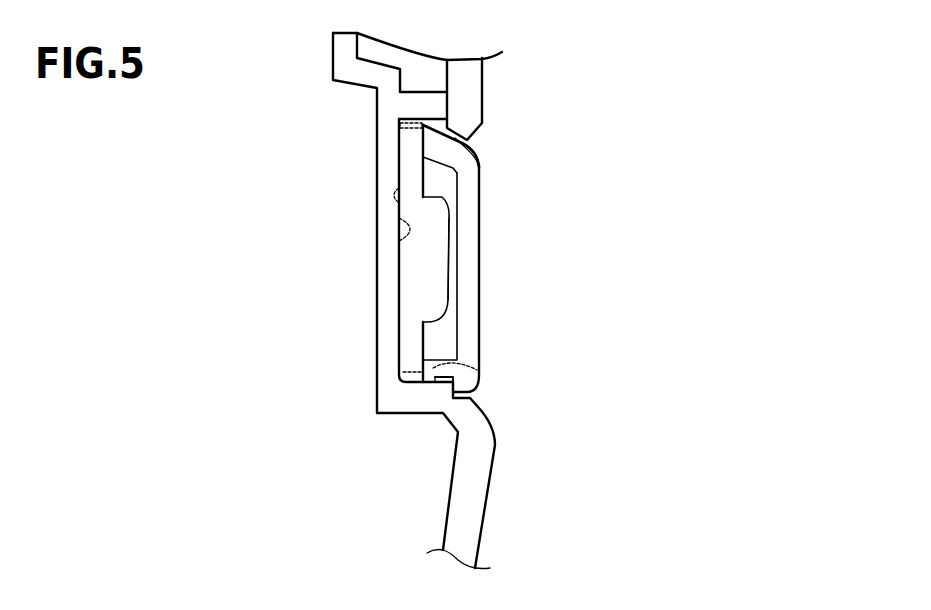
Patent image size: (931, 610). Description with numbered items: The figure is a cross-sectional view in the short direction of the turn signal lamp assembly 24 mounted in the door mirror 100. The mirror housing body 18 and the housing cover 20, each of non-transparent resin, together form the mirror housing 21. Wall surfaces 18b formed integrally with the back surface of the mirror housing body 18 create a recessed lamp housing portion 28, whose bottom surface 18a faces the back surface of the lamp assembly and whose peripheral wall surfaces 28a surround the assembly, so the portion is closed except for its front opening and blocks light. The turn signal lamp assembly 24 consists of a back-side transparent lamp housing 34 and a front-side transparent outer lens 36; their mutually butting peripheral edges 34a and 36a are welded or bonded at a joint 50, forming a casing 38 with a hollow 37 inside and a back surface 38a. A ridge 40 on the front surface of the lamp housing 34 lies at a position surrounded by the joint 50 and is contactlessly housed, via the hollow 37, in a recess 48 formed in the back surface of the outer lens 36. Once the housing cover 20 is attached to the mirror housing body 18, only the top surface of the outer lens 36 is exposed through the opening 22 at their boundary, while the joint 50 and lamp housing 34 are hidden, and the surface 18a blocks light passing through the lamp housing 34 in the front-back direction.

The door mirror 100 is at (708, 137).
The mirror housing body 18 is at (387, 88).
The surface of the mirror housing body 18a is at (412, 232).
The wall surfaces 18b is at (425, 107).
The housing cover 20 is at (468, 82).
The mirror housing 21 is at (576, 4).
The opening 22 is at (479, 165).
The turn signal lamp assembly 24 is at (552, 250).
The lamp housing portion 28 is at (477, 370).
The peripheral wall surfaces 28a is at (405, 133).
The lamp housing 34 is at (427, 322).
The peripheral edge of the lamp housing 34a is at (410, 168).
The outer lens 36 is at (472, 303).
The peripheral edge of the outer lens 36a is at (437, 143).
The hollow 37 is at (453, 288).
The casing 38 is at (630, 310).
The back surface of the casing 38a is at (430, 190).
The ridge 40 is at (437, 266).
The recess 48 is at (437, 375).
The joint 50 is at (435, 145).